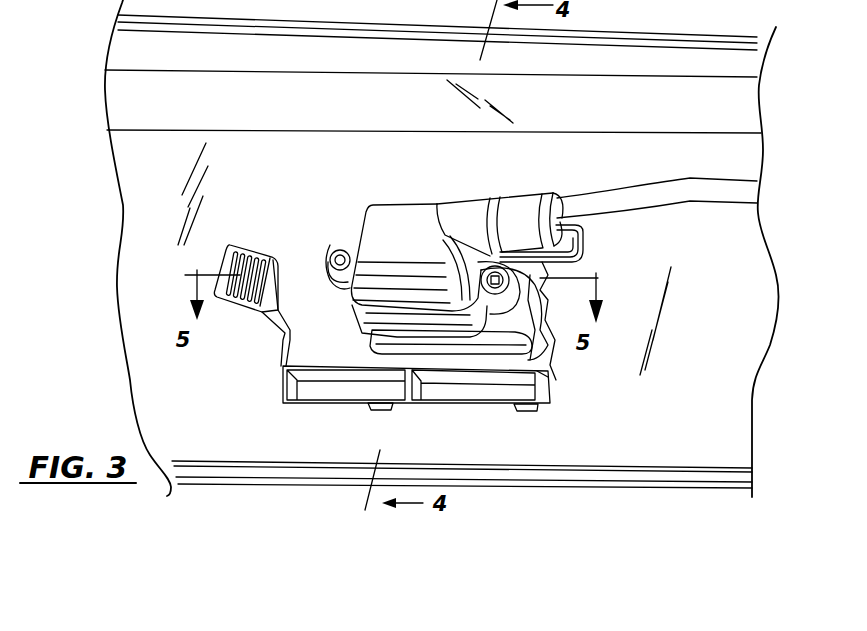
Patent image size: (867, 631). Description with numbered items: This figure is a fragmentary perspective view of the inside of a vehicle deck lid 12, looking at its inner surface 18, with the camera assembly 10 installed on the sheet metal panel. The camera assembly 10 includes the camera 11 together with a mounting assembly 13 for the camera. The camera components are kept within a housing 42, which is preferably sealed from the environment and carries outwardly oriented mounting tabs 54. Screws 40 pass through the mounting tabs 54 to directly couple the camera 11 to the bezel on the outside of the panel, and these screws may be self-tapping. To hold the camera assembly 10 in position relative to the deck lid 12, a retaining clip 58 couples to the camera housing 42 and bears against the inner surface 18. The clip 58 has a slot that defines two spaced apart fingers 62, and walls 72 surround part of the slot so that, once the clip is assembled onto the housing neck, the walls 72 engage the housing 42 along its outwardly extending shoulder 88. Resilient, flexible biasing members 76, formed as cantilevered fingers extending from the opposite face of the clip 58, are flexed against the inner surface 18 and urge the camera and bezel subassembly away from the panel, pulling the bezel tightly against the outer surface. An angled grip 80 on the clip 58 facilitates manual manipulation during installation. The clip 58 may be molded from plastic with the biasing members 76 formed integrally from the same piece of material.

The camera assembly 10 is at (304, 186).
The camera 11 is at (352, 338).
The deck lid 12 is at (115, 296).
The mounting assembly 13 is at (387, 354).
The inner surface 18 is at (734, 441).
The screw 40 is at (341, 250).
The housing 42 is at (410, 207).
The mounting tabs 54 is at (345, 286).
The retaining clip 58 is at (313, 404).
The fingers 62 is at (582, 240).
The walls 72 is at (438, 345).
The biasing members 76 is at (376, 408).
The angled grip 80 is at (240, 322).
The shoulder 88 is at (477, 318).